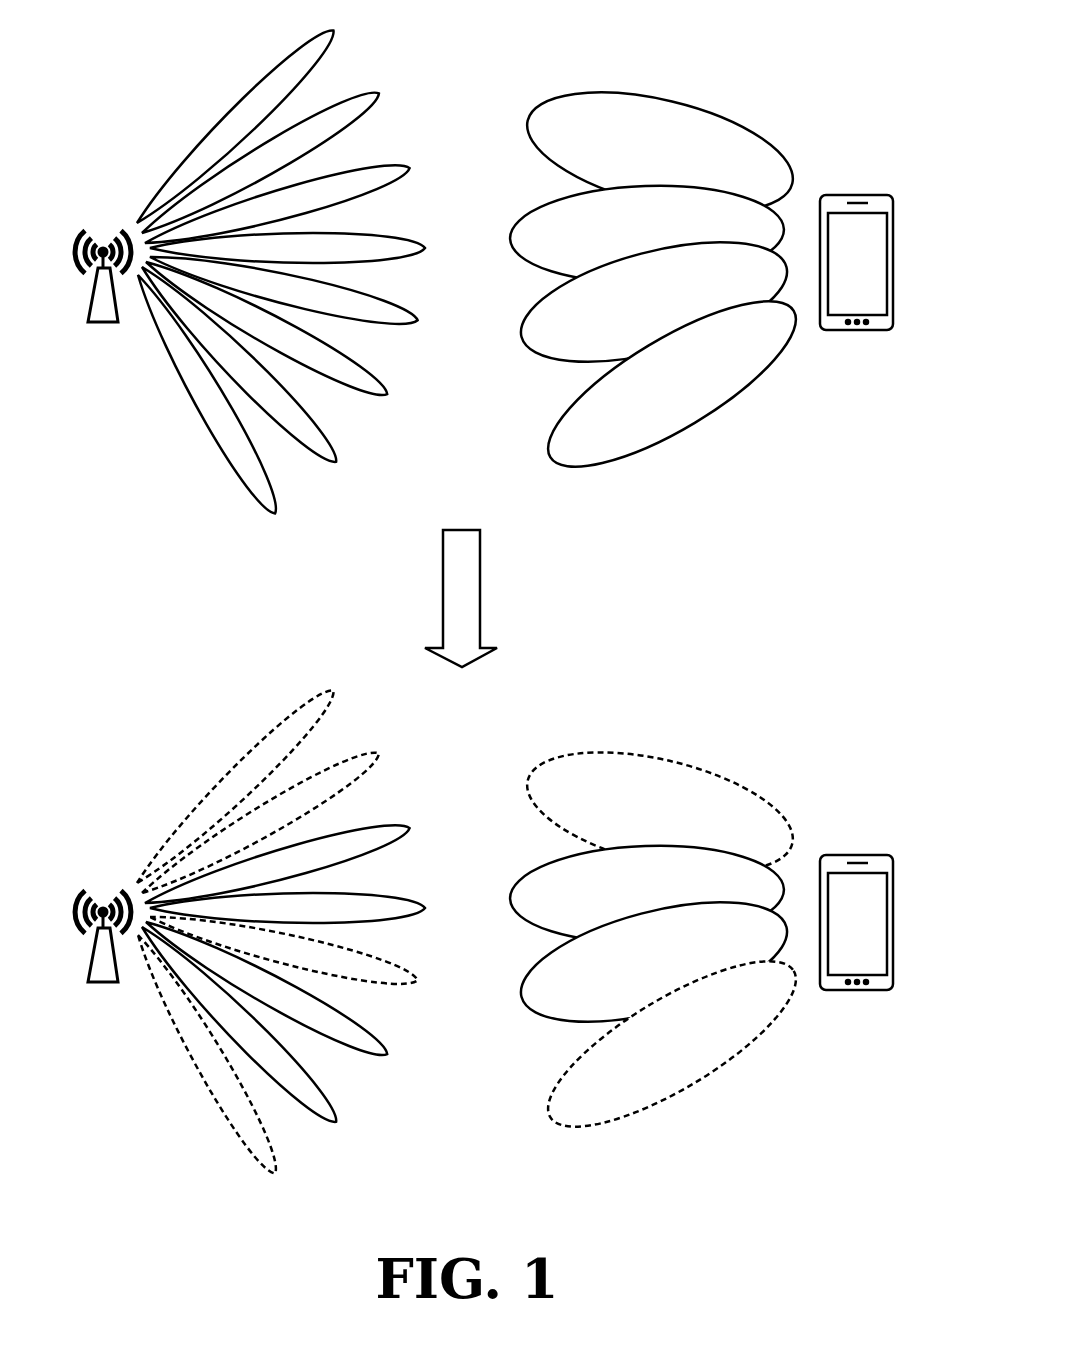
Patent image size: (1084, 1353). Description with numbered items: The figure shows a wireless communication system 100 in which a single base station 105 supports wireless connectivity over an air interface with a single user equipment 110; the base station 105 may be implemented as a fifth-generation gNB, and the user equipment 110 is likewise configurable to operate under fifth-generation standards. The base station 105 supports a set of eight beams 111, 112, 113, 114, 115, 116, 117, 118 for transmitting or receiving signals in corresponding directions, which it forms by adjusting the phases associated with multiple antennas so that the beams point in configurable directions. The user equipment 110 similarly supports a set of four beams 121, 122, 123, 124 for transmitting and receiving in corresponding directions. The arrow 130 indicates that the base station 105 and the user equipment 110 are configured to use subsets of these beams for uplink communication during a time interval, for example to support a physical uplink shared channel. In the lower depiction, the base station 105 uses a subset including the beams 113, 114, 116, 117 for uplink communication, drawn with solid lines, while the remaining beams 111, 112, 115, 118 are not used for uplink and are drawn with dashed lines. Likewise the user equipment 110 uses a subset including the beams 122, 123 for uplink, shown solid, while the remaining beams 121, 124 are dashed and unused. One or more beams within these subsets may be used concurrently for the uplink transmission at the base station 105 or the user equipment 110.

The wireless communication system 100 is at (858, 56).
The base station 105 is at (102, 323).
The user equipment 110 is at (853, 333).
The beam 111 is at (288, 57).
The beam 112 is at (370, 92).
The beam 113 is at (398, 157).
The beam 114 is at (342, 232).
The beam 115 is at (352, 295).
The beam 116 is at (342, 352).
The beam 117 is at (327, 437).
The beam 118 is at (270, 483).
The beam 121 is at (641, 161).
The beam 122 is at (628, 246).
The beam 123 is at (636, 319).
The beam 124 is at (655, 396).
The arrow 130 is at (480, 607).